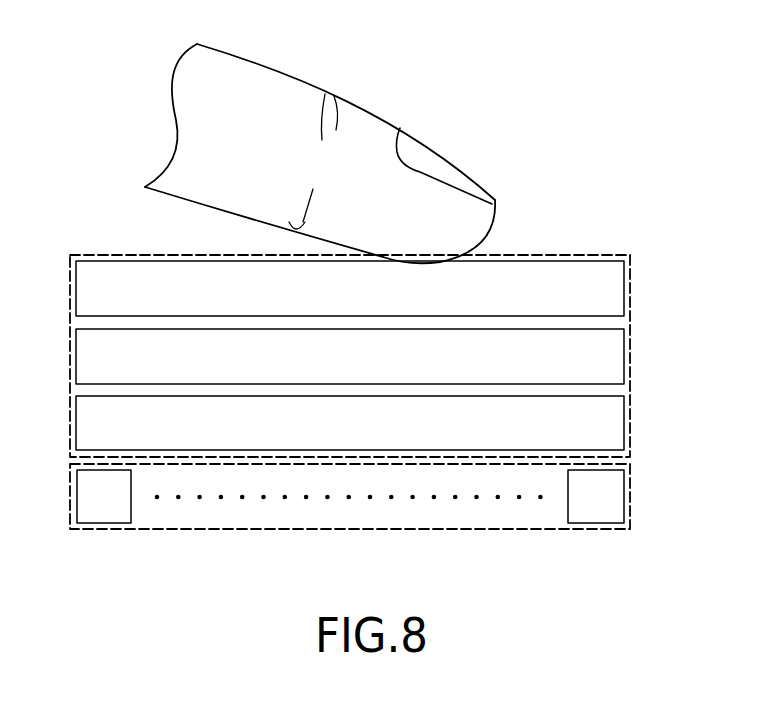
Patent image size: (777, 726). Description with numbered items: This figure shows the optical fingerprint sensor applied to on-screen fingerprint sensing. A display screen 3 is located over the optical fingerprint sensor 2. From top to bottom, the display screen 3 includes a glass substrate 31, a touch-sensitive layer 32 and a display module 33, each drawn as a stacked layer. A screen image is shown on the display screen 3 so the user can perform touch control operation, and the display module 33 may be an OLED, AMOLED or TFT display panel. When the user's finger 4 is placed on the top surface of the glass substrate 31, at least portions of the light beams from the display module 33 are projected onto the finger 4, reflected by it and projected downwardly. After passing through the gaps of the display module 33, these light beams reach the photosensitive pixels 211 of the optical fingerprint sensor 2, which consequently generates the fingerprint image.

The optical fingerprint sensor 2 is at (364, 521).
The photosensitive pixels 211 is at (107, 512).
The display screen 3 is at (382, 330).
The glass substrate 31 is at (625, 287).
The touch-sensitive layer 32 is at (625, 357).
The display module 33 is at (625, 425).
The finger 4 is at (367, 127).